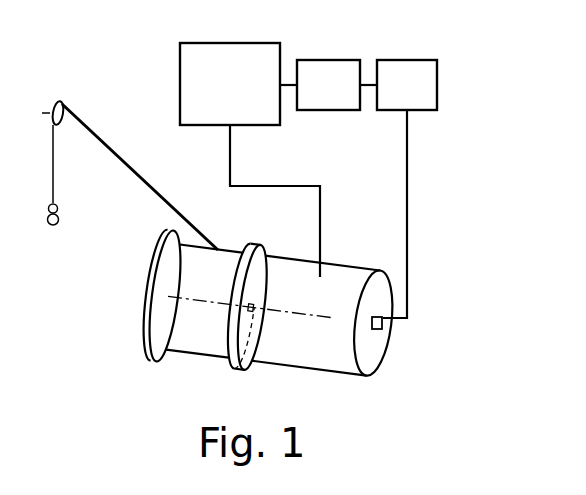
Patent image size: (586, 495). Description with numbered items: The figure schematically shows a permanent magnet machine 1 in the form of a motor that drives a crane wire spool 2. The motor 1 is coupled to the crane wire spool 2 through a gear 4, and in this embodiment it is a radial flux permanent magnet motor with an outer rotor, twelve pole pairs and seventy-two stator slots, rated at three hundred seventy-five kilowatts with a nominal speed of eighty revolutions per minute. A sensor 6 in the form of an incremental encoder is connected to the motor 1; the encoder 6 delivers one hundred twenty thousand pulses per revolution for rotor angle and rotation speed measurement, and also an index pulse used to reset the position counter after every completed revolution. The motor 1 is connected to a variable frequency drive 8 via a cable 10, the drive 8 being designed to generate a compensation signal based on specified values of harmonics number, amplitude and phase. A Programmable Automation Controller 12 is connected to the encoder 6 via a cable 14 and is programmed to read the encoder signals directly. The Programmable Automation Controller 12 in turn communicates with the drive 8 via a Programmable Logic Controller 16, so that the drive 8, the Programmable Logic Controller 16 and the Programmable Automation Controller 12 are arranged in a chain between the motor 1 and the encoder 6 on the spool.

The permanent magnet machine 1 is at (372, 360).
The crane wire spool 2 is at (165, 312).
The gear 4 is at (240, 355).
The sensor 6 is at (385, 327).
The variable frequency drive 8 is at (268, 52).
The cable 10 is at (228, 160).
The Programmable Automation Controller 12 is at (425, 70).
The cable 14 is at (407, 202).
The Programmable Logic Controller 16 is at (341, 73).